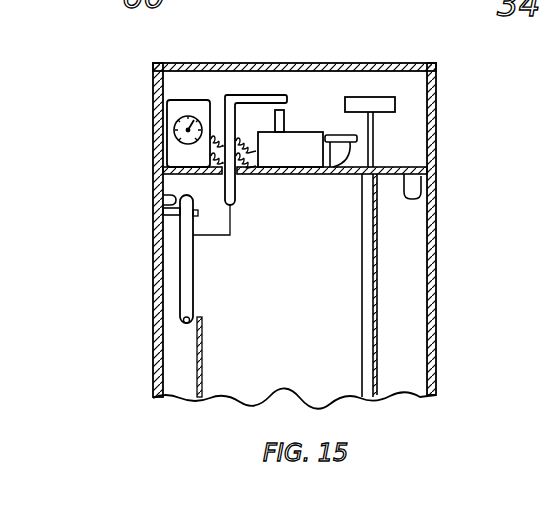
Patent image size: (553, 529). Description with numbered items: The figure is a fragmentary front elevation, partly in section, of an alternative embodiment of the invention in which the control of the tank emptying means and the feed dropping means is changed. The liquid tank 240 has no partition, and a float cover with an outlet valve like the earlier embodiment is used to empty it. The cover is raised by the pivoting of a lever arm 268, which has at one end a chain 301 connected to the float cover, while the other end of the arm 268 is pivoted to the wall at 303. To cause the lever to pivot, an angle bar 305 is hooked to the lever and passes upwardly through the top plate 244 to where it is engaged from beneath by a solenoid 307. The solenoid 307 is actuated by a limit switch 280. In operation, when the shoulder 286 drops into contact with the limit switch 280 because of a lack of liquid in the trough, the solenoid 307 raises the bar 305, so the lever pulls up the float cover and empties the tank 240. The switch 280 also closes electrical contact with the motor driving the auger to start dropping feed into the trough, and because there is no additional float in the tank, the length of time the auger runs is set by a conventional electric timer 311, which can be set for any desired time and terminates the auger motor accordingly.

The liquid tank 240 is at (402, 313).
The top plate 244 is at (421, 188).
The lever arm 268 is at (193, 277).
The limit switch 280 is at (334, 172).
The shoulder 286 is at (393, 102).
The chain 301 is at (203, 362).
The pivot 303 is at (170, 197).
The angle bar 305 is at (264, 94).
The solenoid 307 is at (290, 122).
The electric timer 311 is at (172, 115).